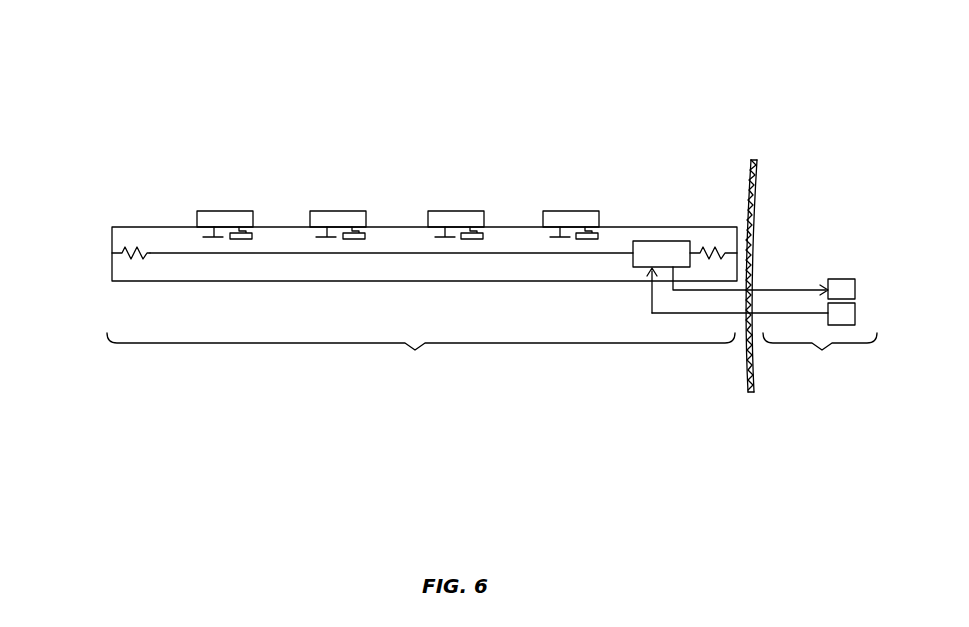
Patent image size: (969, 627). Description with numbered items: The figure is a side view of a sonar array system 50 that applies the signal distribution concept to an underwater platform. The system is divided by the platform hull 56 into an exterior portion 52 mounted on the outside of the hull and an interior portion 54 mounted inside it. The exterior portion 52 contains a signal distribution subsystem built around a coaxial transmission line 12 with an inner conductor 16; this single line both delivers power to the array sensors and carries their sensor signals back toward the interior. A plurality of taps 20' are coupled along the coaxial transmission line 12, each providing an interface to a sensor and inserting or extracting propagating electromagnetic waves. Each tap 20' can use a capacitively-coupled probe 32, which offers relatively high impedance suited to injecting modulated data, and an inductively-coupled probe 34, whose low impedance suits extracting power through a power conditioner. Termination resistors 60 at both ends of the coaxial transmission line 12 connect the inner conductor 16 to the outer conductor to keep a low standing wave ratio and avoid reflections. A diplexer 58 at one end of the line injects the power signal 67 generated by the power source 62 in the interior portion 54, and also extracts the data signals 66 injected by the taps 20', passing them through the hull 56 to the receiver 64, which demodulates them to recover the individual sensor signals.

The sonar array system 50 is at (108, 75).
The coaxial transmission line 12 is at (185, 282).
The inner conductor 16 is at (318, 254).
The tap 20' is at (187, 204).
The capacitively-coupled probe 32 is at (436, 238).
The inductively-coupled probe 34 is at (483, 233).
The diplexer 58 is at (643, 241).
The termination resistor 60 is at (122, 252).
The platform hull 56 is at (757, 180).
The data signals 66 is at (763, 289).
The receiver 64 is at (841, 279).
The power source 62 is at (856, 312).
The power signal 67 is at (708, 314).
The exterior portion 52 is at (421, 359).
The interior portion 54 is at (820, 359).